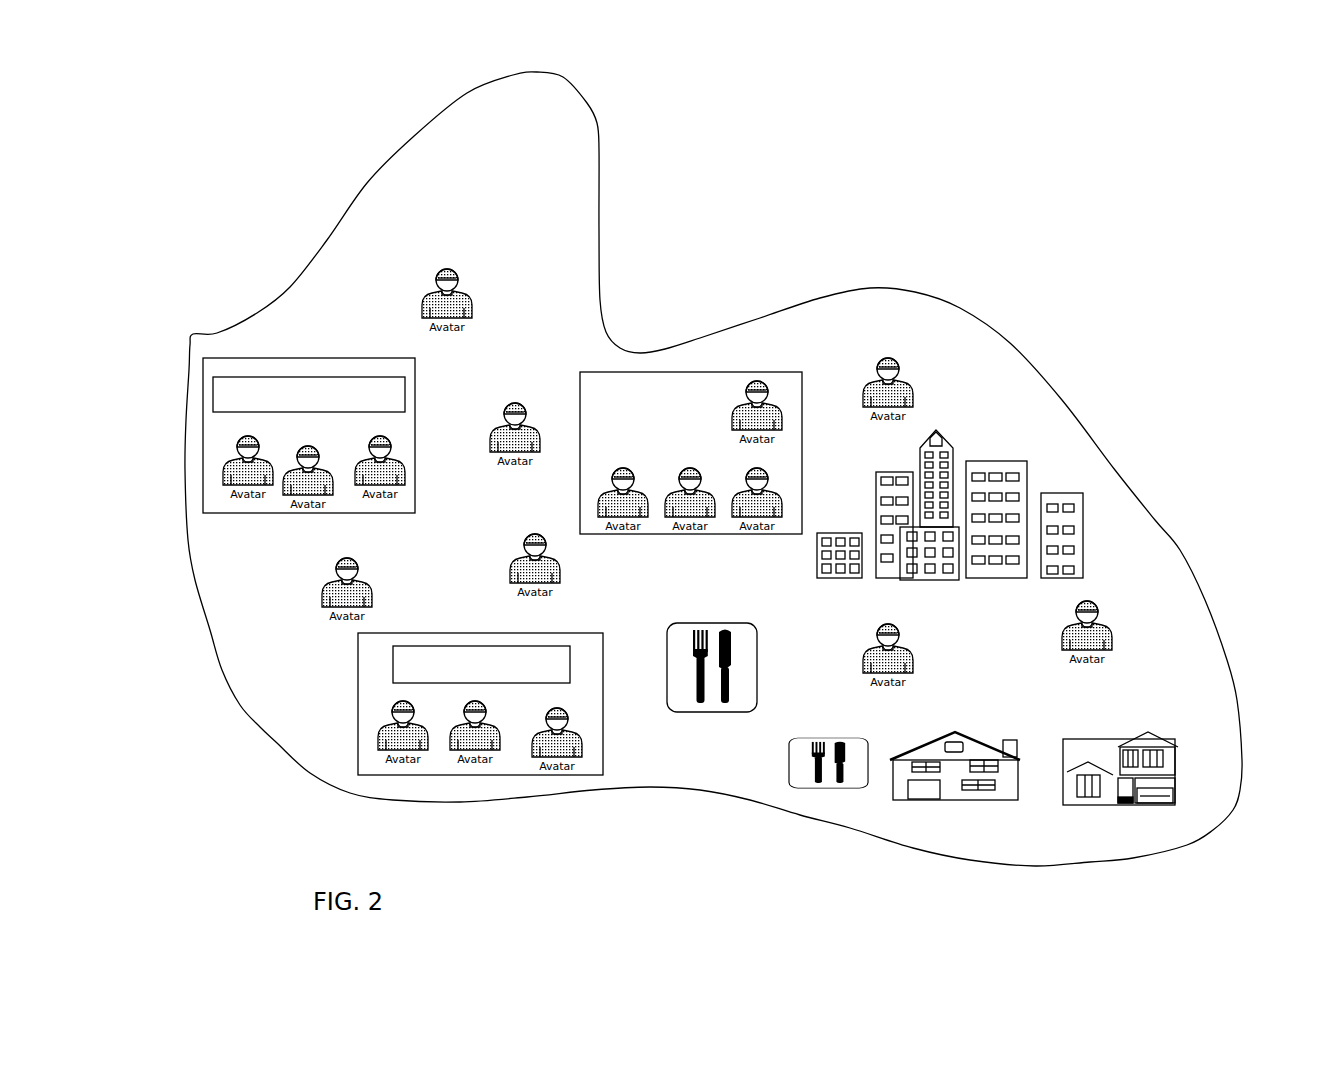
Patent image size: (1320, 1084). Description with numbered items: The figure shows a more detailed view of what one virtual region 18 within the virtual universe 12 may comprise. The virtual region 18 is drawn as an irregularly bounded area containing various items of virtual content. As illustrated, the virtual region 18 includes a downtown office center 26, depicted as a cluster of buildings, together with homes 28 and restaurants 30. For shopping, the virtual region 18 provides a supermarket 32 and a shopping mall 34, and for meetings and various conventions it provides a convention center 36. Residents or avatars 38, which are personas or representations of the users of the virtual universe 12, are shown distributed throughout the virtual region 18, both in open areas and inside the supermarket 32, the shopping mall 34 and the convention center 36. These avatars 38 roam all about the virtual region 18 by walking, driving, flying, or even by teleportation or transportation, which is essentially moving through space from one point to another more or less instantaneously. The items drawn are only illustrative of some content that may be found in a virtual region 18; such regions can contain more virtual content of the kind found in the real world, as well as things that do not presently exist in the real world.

The virtual universe 12 is at (990, 140).
The virtual region 18 is at (600, 130).
The downtown office center 26 is at (1020, 453).
The homes 28 is at (966, 800).
The restaurants 30 is at (758, 671).
The supermarket 32 is at (310, 358).
The shopping mall 34 is at (358, 705).
The convention center 36 is at (675, 536).
The avatars 38 is at (468, 290).